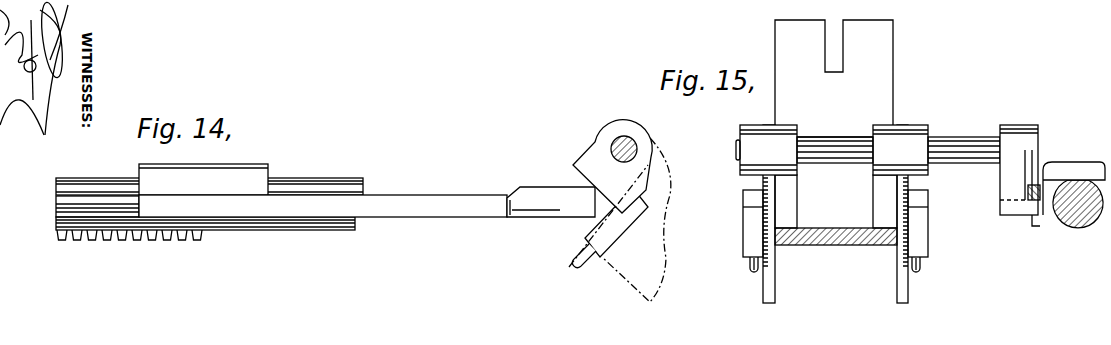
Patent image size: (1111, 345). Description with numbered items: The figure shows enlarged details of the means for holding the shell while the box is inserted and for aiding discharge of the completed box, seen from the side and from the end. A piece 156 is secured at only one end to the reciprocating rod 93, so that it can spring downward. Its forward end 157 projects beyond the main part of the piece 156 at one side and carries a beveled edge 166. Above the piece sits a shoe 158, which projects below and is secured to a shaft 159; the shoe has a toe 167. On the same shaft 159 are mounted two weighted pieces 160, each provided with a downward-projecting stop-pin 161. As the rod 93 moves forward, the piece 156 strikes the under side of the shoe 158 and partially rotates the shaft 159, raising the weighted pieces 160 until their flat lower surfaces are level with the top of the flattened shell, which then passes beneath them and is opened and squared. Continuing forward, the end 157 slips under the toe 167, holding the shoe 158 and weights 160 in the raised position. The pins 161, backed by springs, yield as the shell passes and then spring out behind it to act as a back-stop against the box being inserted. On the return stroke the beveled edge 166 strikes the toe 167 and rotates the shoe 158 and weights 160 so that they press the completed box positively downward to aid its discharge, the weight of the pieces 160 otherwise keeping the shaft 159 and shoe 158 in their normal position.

In FIG. 14, the rod 93 is at (88, 244).
In FIG. 15, the rod 93 is at (1088, 228).
In FIG. 14, the piece 156 is at (384, 196).
In FIG. 15, the piece 156 is at (1005, 219).
In FIG. 14, the end 157 is at (534, 186).
In FIG. 15, the end 157 is at (1033, 217).
In FIG. 14, the shoe 158 is at (598, 144).
In FIG. 15, the shoe 158 is at (1040, 131).
In FIG. 14, the shaft 159 is at (637, 146).
In FIG. 15, the shaft 159 is at (950, 137).
In FIG. 14, the weighted pieces 160 is at (664, 237).
In FIG. 15, the weighted pieces 160 is at (897, 268).
In FIG. 14, the stop-pin 161 is at (576, 269).
In FIG. 15, the stop-pin 161 is at (750, 268).
In FIG. 14, the beveled edge 166 is at (513, 190).
In FIG. 14, the toe 167 is at (630, 201).